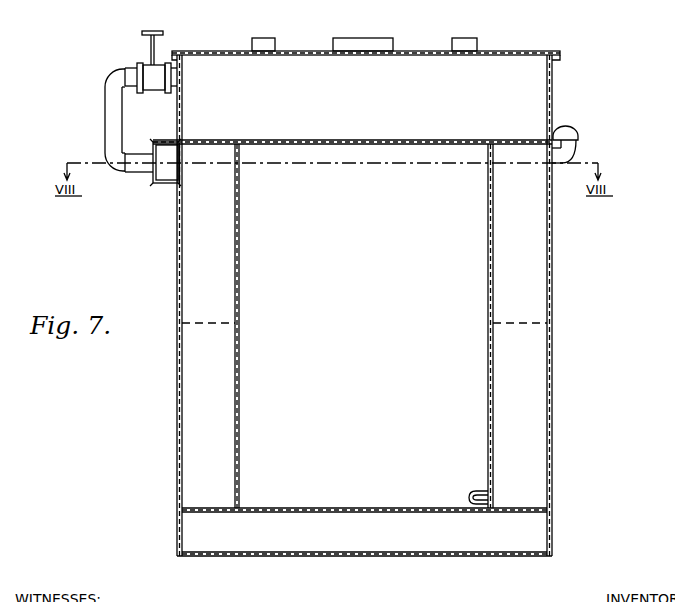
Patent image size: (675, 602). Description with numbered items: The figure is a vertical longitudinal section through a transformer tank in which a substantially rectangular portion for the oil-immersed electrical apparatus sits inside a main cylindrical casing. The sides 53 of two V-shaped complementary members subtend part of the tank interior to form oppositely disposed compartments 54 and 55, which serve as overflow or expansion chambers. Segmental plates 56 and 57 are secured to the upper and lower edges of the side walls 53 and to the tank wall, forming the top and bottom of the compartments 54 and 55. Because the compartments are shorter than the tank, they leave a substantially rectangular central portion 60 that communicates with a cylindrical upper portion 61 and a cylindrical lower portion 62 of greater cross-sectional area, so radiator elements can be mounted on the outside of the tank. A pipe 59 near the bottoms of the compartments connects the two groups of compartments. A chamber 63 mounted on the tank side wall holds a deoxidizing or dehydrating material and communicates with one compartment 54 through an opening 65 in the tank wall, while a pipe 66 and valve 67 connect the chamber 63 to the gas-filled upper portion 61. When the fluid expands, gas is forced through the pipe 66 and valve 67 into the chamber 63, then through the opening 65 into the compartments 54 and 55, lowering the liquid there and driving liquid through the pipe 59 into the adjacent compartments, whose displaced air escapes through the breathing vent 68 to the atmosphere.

The sides 53 is at (240, 297).
The compartment 54 is at (217, 308).
The compartment 55 is at (529, 308).
The segmental plate 56 is at (210, 140).
The segmental plate 57 is at (210, 512).
The pipe 59 is at (470, 493).
The central portion 60 is at (374, 308).
The upper portion 61 is at (364, 97).
The lower portion 62 is at (369, 543).
The chamber 63 is at (165, 172).
The opening 65 is at (182, 167).
The pipe 66 is at (116, 128).
The valve 67 is at (152, 70).
The breathing vent 68 is at (567, 131).